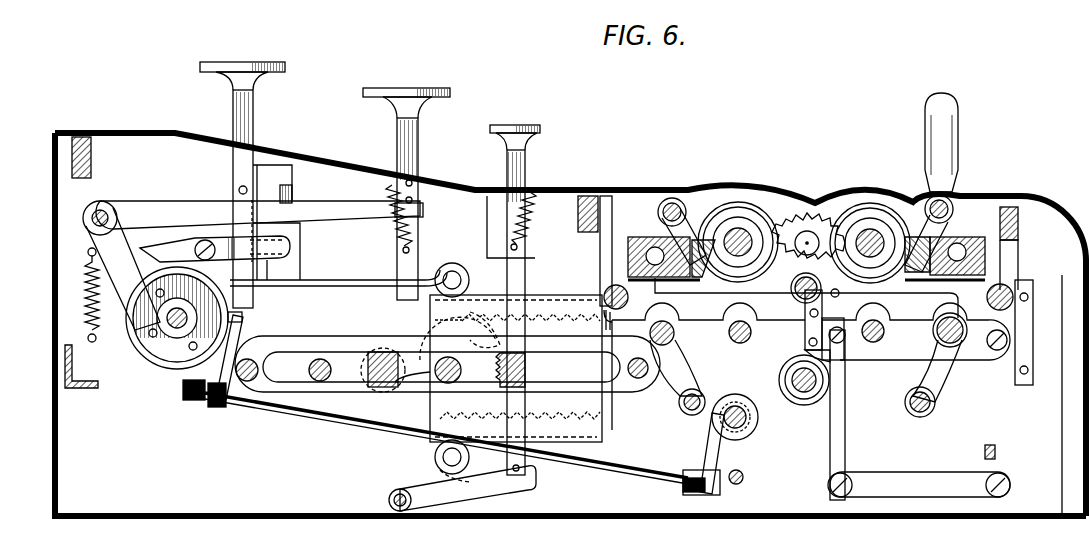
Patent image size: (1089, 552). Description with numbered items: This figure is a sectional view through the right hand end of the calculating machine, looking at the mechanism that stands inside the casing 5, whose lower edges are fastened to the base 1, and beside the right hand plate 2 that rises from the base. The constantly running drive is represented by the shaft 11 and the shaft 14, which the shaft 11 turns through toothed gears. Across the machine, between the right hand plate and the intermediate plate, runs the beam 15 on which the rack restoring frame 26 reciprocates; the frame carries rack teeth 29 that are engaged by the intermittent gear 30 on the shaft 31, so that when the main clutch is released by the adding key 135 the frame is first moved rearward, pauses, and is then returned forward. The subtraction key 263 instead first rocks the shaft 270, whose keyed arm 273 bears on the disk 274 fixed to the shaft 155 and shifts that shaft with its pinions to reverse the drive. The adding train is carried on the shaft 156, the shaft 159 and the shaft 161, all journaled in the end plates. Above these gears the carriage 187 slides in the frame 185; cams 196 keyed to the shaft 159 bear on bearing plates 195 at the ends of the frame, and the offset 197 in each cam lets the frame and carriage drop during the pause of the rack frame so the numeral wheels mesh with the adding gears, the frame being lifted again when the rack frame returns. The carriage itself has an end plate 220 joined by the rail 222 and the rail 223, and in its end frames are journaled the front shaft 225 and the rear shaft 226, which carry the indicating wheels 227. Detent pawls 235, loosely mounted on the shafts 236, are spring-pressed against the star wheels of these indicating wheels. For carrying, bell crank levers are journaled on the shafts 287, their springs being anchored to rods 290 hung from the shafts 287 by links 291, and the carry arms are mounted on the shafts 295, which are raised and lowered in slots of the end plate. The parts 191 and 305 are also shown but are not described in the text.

The base 1 is at (913, 520).
The right hand plate 2 is at (77, 282).
The casing 5 is at (1045, 203).
The shaft 11 is at (325, 362).
The shaft 14 is at (176, 330).
The beam 15 is at (387, 355).
The rack restoring frame 26 is at (528, 330).
The rack teeth 29 is at (489, 330).
The intermittent gear 30 is at (425, 380).
The shaft 31 is at (450, 365).
The adding key 135 is at (420, 88).
The shaft 155 is at (732, 407).
The shaft 156 is at (726, 338).
The shaft 159 is at (805, 394).
The shaft 161 is at (886, 331).
The frame 185 is at (835, 445).
The carriage 187 is at (815, 352).
The link 191 is at (885, 355).
The bearing plates 195 is at (808, 332).
The cams 196 is at (784, 378).
The offset 197 is at (785, 360).
The end plate 220 is at (838, 212).
The rail 222 is at (697, 277).
The rail 223 is at (946, 279).
The front shaft 225 is at (870, 250).
The rear shaft 226 is at (745, 229).
The indicating wheels 227 is at (738, 210).
The detent pawls 235 is at (680, 230).
The shafts 236 is at (674, 198).
The subtraction key 263 is at (270, 63).
The shaft 270 is at (360, 425).
The arm 273 is at (716, 450).
The disk 274 is at (759, 418).
The shafts 287 is at (675, 336).
The rods 290 is at (693, 412).
The links 291 is at (672, 390).
The shafts 295 is at (614, 285).
The stud 305 is at (792, 288).